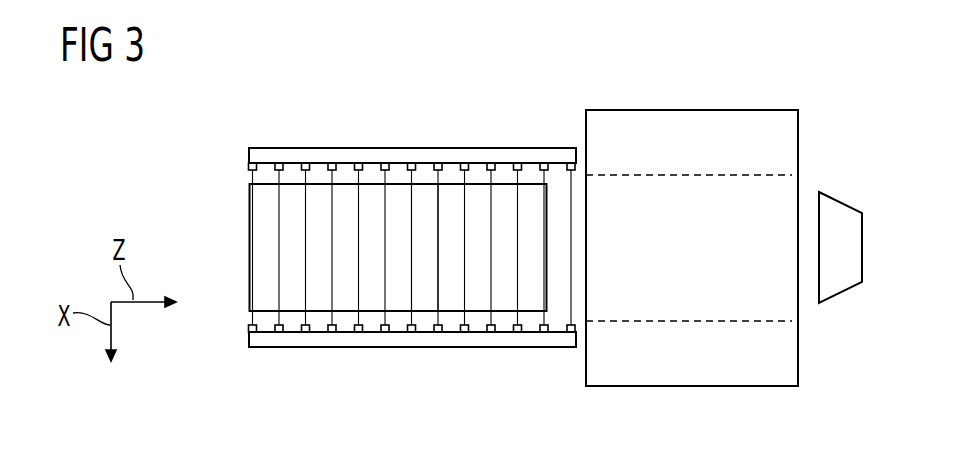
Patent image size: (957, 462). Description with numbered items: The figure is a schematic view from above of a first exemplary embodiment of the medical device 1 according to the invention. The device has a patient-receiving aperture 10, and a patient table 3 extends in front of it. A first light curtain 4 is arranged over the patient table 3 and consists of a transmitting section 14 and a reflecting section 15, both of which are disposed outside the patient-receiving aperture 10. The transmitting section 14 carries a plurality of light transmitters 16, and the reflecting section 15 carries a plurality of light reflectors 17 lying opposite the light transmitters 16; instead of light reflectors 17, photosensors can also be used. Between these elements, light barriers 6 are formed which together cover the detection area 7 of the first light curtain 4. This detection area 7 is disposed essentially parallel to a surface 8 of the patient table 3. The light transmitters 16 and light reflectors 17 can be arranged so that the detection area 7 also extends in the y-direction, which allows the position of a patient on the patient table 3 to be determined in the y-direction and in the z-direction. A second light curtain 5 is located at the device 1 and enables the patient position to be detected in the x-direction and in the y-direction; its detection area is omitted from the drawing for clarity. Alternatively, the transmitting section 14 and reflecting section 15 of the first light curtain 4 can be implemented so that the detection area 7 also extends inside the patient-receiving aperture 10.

The medical device 1 is at (726, 211).
The patient table 3 is at (249, 230).
The first light curtain 4 is at (380, 250).
The second light curtain 5 is at (843, 203).
The light barriers 6 is at (411, 207).
The detection area 7 is at (450, 207).
The surface of the patient table 8 is at (262, 262).
The patient-receiving aperture 10 is at (780, 303).
The transmitting section 14 is at (319, 152).
The reflecting section 15 is at (320, 340).
The light transmitters 16 is at (250, 167).
The light reflectors 17 is at (250, 328).